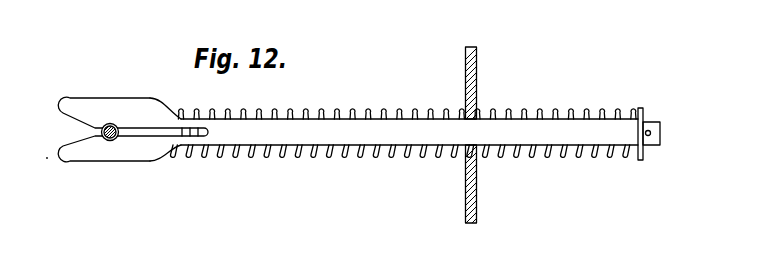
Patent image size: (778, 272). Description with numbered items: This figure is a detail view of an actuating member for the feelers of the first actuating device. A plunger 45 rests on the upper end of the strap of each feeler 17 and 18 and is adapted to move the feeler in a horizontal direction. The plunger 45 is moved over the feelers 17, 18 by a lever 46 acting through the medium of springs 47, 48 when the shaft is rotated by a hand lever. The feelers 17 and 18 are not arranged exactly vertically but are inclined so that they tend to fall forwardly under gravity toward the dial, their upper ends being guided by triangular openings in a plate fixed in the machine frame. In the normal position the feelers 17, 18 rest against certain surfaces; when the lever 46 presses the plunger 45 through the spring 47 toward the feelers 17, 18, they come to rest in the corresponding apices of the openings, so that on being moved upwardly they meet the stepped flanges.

The feeler 17 is at (110, 105).
The feeler 18 is at (111, 123).
The plunger 45 is at (284, 132).
The lever 46 is at (477, 74).
The spring 47 is at (299, 148).
The spring 48 is at (587, 110).